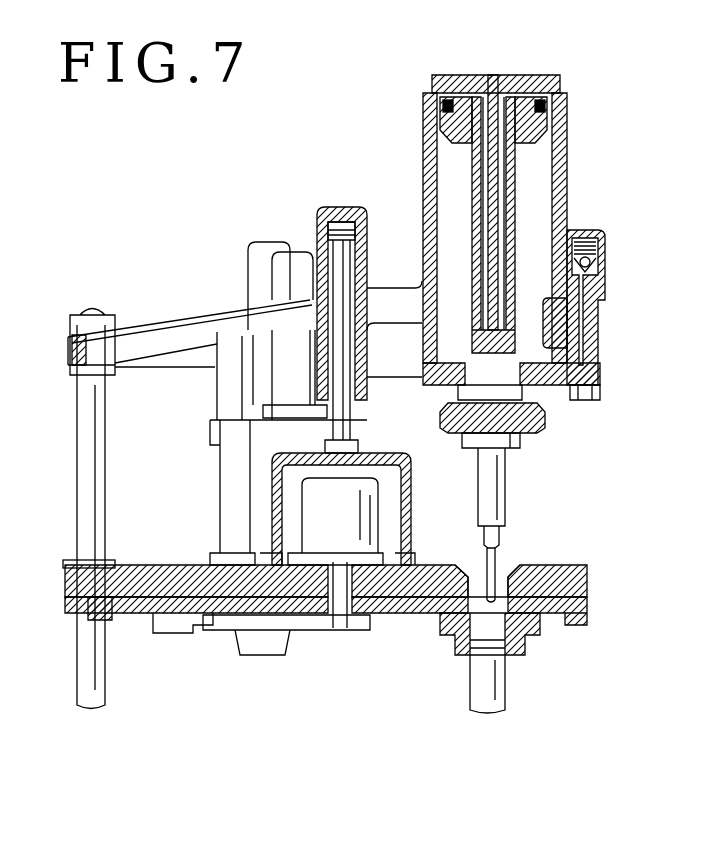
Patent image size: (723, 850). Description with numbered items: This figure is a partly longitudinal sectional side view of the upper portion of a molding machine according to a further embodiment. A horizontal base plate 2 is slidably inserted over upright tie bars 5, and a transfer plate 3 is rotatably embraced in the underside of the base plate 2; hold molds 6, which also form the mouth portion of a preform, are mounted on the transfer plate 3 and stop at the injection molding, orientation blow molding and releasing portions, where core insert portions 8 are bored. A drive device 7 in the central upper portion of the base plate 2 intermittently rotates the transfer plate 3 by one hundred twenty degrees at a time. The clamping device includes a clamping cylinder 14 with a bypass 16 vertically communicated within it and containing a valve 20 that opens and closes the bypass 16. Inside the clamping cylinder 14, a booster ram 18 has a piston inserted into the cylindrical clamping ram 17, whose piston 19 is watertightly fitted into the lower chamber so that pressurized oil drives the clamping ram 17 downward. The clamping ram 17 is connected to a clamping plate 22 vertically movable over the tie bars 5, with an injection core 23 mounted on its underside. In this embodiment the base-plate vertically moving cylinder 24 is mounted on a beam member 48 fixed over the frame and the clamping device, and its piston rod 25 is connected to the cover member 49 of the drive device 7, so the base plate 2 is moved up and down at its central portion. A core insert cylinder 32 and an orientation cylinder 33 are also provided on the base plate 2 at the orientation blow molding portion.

The horizontal base plate 2 is at (72, 580).
The transfer plate 3 is at (75, 353).
The tie bars 5 is at (78, 470).
The hold molds 6 is at (257, 648).
The drive device 7 is at (345, 518).
The core insert portions 8 is at (500, 574).
The clamping cylinder 14 is at (425, 122).
The bypass 16 is at (580, 342).
The clamping ram 17 is at (515, 173).
The booster ram 18 is at (488, 182).
The piston 19 is at (528, 124).
The valve 20 is at (600, 275).
The clamping plate 22 is at (530, 420).
The injection core 23 is at (485, 560).
The base-plate vertically moving cylinder 24 is at (316, 210).
The piston rod 25 is at (345, 398).
The core insert cylinder 32 is at (292, 282).
The orientation cylinder 33 is at (253, 240).
The beam member 48 is at (165, 334).
The housing 49 is at (272, 492).